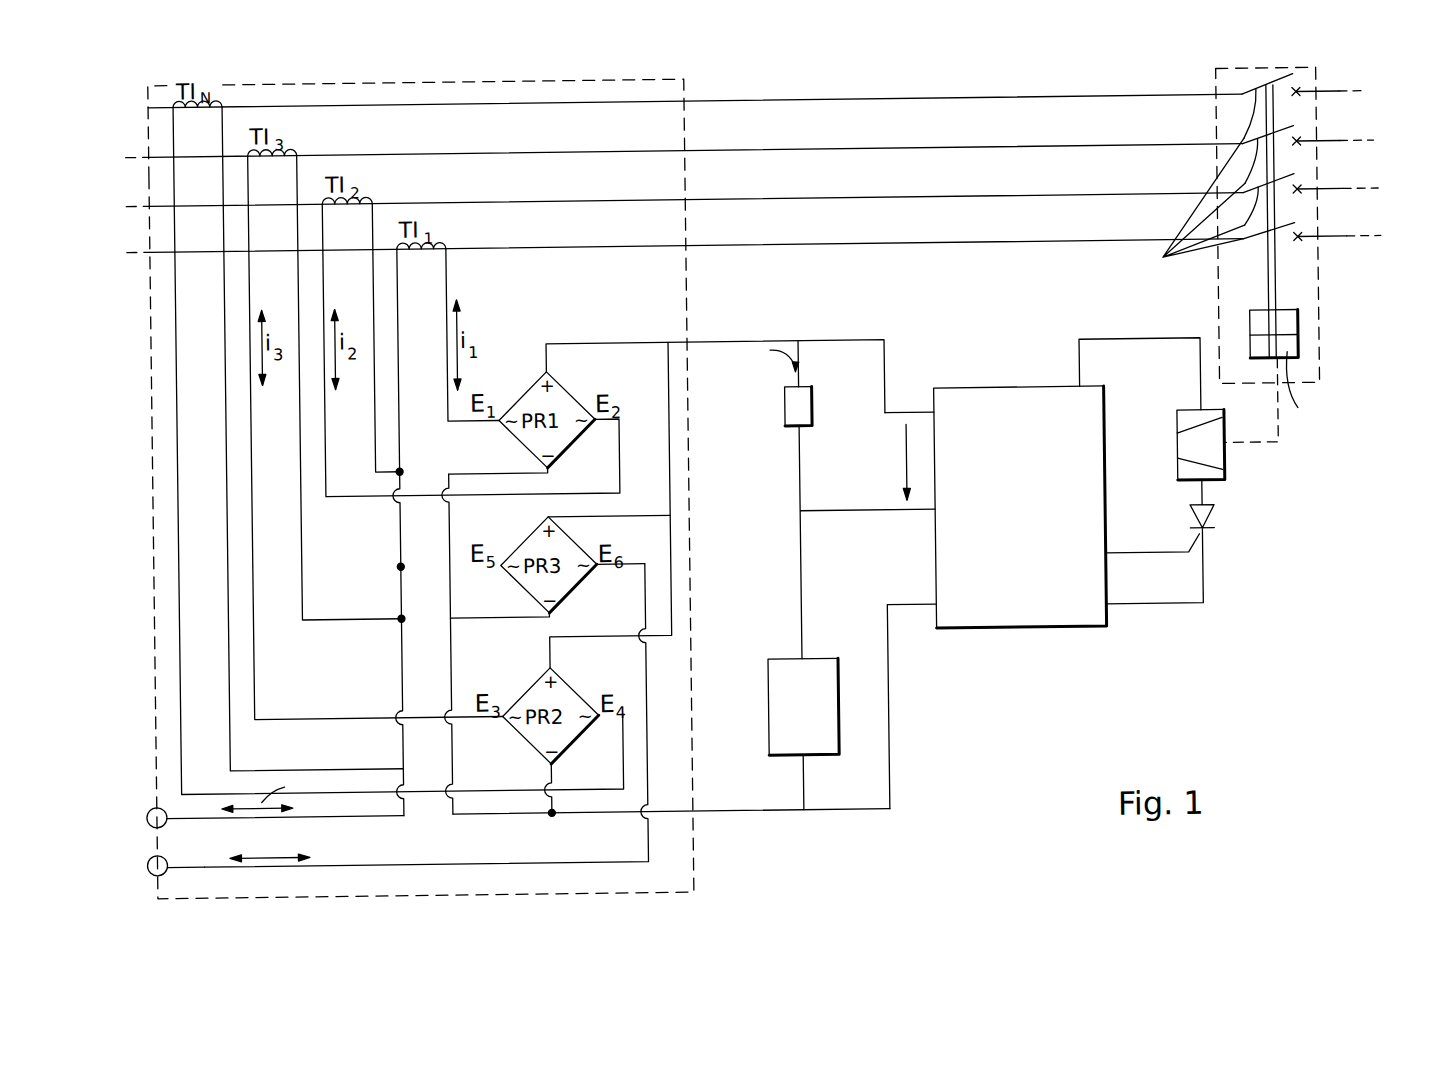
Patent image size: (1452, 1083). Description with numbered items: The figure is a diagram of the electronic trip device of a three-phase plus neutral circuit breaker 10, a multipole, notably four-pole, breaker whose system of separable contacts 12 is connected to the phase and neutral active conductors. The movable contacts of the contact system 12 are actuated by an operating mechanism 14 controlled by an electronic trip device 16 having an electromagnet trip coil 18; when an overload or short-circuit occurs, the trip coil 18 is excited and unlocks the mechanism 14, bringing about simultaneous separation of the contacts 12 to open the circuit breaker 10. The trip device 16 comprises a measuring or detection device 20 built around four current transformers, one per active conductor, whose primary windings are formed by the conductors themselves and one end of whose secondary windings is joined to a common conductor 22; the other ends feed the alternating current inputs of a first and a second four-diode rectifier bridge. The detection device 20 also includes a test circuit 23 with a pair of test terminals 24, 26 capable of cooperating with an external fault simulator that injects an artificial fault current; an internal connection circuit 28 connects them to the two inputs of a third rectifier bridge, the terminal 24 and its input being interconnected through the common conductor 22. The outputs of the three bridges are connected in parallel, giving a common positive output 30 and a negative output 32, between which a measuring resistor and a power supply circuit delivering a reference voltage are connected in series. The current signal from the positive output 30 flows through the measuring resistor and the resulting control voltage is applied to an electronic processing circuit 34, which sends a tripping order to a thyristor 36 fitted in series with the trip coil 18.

The multipole electrical circuit breaker 10 is at (1285, 693).
The system of separable contacts 12 is at (1260, 175).
The operating mechanism 14 is at (1300, 347).
The electronic trip device 16 is at (942, 644).
The electromagnet trip coil 18 is at (1228, 460).
The measuring or detection device 20 is at (689, 865).
The common conductor 22 is at (400, 646).
The test circuit 23 is at (358, 902).
The test terminal 24 is at (144, 803).
The test terminal 26 is at (144, 853).
The internal connection circuit 28 is at (408, 861).
The common positive output 30 is at (688, 340).
The negative output 32 is at (548, 811).
The electronic processing circuit 34 is at (1020, 507).
The thyristor 36 is at (1210, 519).